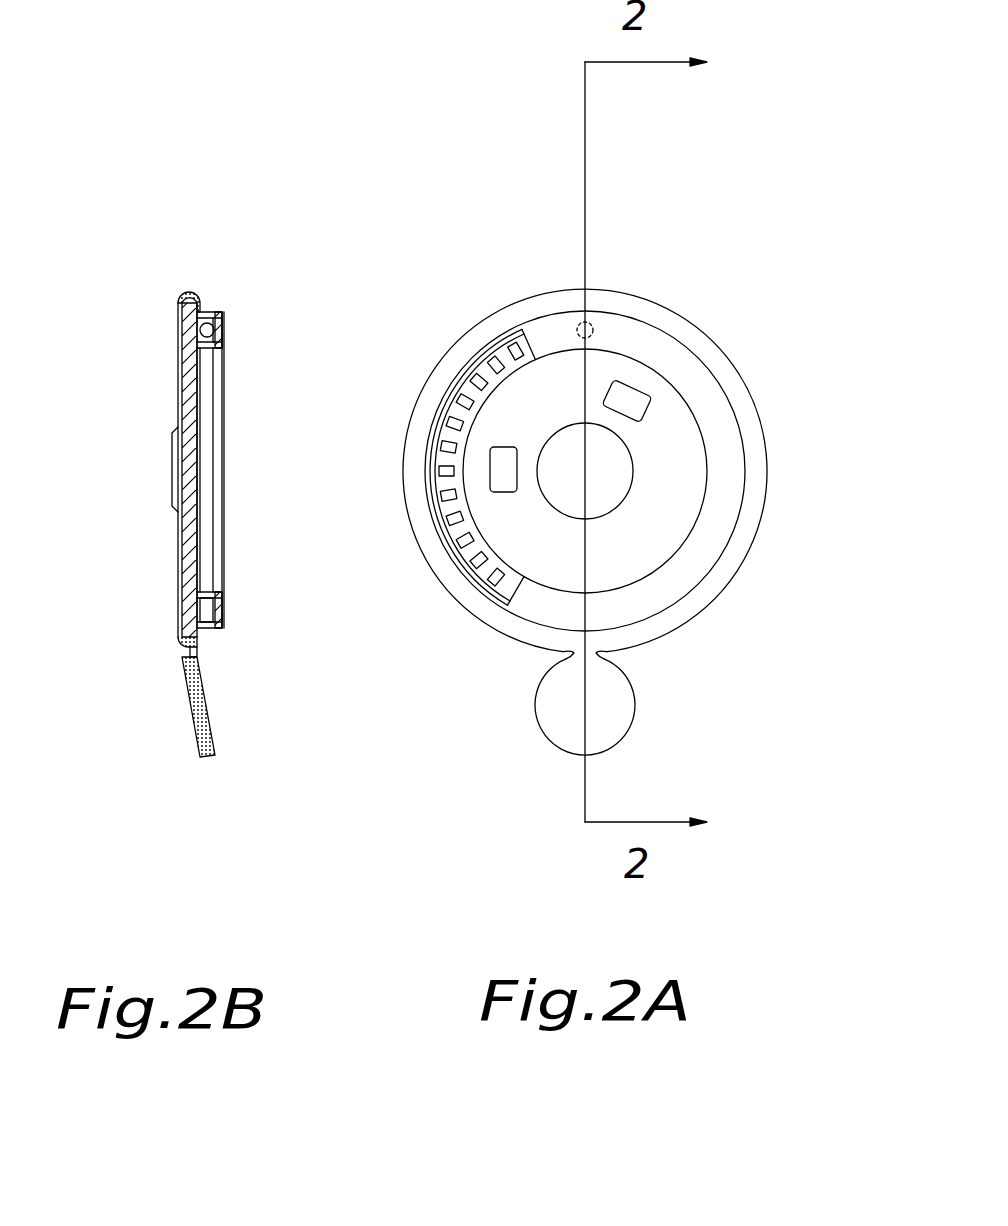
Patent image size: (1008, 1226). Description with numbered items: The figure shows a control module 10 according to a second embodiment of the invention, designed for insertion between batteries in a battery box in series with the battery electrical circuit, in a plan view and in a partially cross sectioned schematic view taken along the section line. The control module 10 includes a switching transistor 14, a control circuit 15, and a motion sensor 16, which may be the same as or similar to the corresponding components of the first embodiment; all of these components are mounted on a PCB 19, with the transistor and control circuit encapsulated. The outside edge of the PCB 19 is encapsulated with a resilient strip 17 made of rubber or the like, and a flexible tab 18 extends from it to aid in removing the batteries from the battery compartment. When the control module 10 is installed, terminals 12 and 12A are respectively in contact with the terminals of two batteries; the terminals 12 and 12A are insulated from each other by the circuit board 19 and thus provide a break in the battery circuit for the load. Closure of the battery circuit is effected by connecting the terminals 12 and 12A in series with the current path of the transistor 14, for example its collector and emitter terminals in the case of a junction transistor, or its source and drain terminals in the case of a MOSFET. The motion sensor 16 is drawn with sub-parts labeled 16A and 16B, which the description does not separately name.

In FIG. 2A, the control module 10 is at (785, 489).
In FIG. 2A, the terminal 12 is at (603, 487).
In FIG. 2B, the terminal 12 is at (223, 483).
In FIG. 2B, the terminal 12A is at (177, 475).
In FIG. 2A, the switching transistor 14 is at (497, 472).
In FIG. 2A, the control circuit 15 is at (648, 410).
In FIG. 2A, the motion sensor 16 is at (478, 325).
In FIG. 2B, the motion sensor 16 is at (245, 300).
In FIG. 2A, the bearing ball 16A is at (588, 324).
In FIG. 2B, the bearing ball 16A is at (203, 333).
In FIG. 2A, the bearing slots 16B is at (513, 347).
In FIG. 2B, the bearing slots 16B is at (225, 333).
In FIG. 2A, the resilient strip 17 is at (452, 370).
In FIG. 2B, the resilient strip 17 is at (185, 298).
In FIG. 2A, the flexible tab 18 is at (547, 733).
In FIG. 2B, the flexible tab 18 is at (205, 703).
In FIG. 2A, the PCB 19 is at (525, 542).